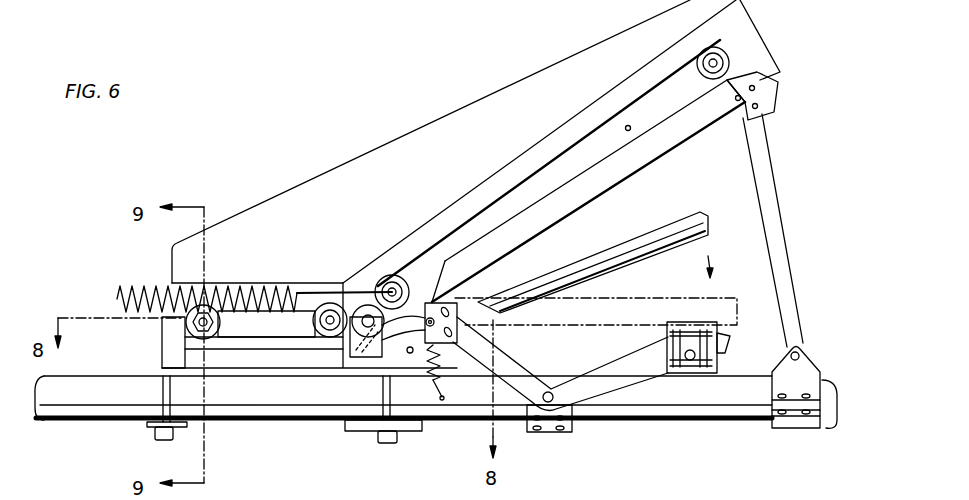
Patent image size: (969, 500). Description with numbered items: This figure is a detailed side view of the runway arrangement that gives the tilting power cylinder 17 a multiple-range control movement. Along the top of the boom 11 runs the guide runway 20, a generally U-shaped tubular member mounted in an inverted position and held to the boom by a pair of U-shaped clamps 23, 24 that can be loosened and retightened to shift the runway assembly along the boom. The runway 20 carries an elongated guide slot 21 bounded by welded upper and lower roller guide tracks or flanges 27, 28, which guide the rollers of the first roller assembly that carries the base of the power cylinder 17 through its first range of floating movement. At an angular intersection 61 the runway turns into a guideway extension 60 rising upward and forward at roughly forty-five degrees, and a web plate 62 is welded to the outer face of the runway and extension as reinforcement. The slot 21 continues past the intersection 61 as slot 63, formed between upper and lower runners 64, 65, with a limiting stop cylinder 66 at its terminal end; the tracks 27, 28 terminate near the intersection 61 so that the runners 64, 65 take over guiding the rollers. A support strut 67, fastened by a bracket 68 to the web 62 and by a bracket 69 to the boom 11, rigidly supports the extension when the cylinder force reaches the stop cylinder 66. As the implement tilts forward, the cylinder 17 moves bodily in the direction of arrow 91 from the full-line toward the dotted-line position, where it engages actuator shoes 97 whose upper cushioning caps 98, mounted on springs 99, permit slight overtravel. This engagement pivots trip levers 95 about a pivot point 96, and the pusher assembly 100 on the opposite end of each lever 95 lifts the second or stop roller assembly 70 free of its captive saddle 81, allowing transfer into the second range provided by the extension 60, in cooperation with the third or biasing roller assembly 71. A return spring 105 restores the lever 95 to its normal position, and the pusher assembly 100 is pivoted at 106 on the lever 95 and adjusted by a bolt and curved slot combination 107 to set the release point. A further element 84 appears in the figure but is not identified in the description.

The boom 11 is at (690, 418).
The power cylinder 17 is at (662, 238).
The guide runway 20 is at (160, 342).
The guide slot 21 is at (243, 323).
The U-shaped clamp 23 is at (147, 428).
The U-shaped clamp 24 is at (355, 428).
The upper roller guide track 27 is at (247, 283).
The lower roller guide track 28 is at (263, 333).
The guideway extension 60 is at (548, 147).
The angular intersection 61 is at (388, 262).
The web plate 62 is at (472, 107).
The slot 63 is at (663, 90).
The upper runner 64 is at (600, 122).
The lower runner 65 is at (630, 130).
The limiting stop cylinder 66 is at (715, 62).
The support strut 67 is at (782, 221).
The bracket 68 is at (776, 100).
The bracket 69 is at (787, 428).
The stop roller assembly 70 is at (374, 490).
The biasing roller assembly 71 is at (422, 496).
The saddle 81 is at (348, 494).
The component 84 is at (270, 493).
The arrow 91 is at (708, 256).
The trip lever 95 is at (615, 383).
The pivot point 96 is at (550, 395).
The actuator shoe 97 is at (690, 368).
The upper cushioning cap 98 is at (698, 324).
The springs 99 is at (672, 340).
The pusher assembly 100 is at (428, 343).
The return spring 105 is at (444, 362).
The pivot 106 is at (431, 318).
The bolt and curved slot combination 107 is at (458, 320).